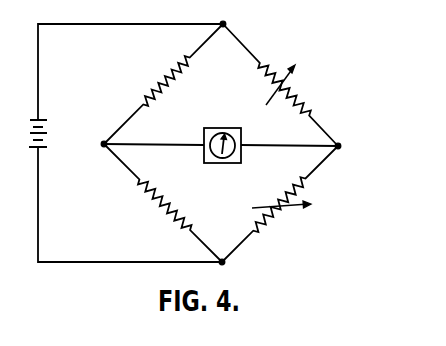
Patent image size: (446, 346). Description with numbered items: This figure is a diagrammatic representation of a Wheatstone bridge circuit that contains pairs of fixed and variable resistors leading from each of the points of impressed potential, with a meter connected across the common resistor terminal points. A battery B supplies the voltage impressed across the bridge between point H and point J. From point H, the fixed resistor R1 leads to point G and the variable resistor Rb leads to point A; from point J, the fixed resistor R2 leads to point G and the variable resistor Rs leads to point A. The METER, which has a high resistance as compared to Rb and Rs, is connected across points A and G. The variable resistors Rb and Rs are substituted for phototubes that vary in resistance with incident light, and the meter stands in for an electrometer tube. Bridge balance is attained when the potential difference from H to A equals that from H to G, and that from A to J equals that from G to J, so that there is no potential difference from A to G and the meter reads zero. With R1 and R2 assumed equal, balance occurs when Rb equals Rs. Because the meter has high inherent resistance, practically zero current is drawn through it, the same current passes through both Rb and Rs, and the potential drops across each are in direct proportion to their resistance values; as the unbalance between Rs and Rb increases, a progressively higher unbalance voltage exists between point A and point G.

The bridge point H is at (223, 16).
The bridge point G is at (98, 144).
The bridge point A is at (344, 146).
The bridge point J is at (220, 272).
The fixed resistor R1 is at (163, 84).
The fixed resistor R2 is at (163, 203).
The variable resistor Rb is at (280, 85).
The variable resistor Rs is at (280, 204).
The meter METER is at (221, 155).
The battery B is at (55, 161).